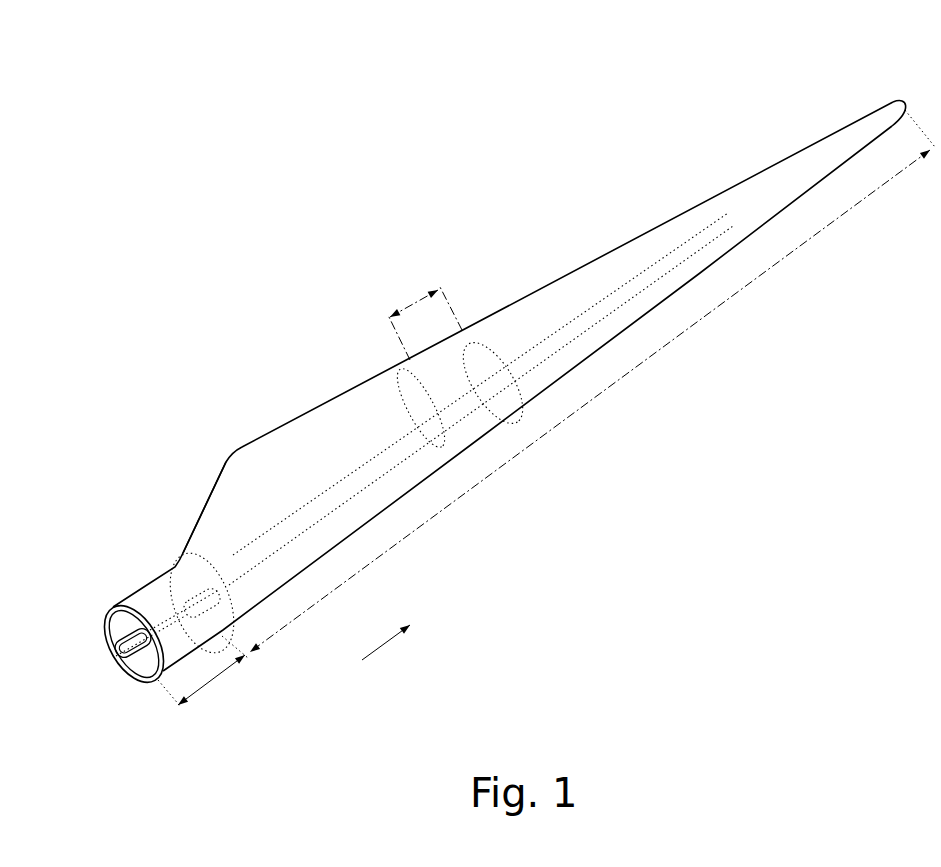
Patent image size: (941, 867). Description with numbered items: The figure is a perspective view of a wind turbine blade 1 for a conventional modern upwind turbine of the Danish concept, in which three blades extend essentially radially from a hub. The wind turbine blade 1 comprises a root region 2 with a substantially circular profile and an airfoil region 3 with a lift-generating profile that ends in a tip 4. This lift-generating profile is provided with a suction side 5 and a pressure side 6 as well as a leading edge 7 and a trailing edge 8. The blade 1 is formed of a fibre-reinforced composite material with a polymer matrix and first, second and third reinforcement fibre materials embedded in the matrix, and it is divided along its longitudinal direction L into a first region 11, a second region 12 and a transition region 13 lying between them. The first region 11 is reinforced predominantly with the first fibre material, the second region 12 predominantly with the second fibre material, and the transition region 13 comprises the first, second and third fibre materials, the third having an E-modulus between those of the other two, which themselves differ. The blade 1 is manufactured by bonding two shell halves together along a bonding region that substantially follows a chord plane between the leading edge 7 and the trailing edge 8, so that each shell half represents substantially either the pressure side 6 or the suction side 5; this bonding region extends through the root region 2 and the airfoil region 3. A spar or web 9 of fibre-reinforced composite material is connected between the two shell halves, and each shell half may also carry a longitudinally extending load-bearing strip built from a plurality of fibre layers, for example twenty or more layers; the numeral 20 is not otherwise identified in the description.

The wind turbine blade 1 is at (509, 364).
The root region 2 is at (215, 680).
The airfoil region 3 is at (585, 405).
The tip 4 is at (868, 118).
The suction side 5 is at (783, 200).
The pressure side 6 is at (390, 370).
The leading edge 7 is at (505, 418).
The trailing edge 8 is at (496, 308).
The spar or web 9 is at (142, 660).
The first region 11 is at (315, 423).
The second region 12 is at (667, 225).
The transition region 13 is at (425, 320).
The root flange ring 20 is at (150, 612).
The longitudinal direction L is at (393, 633).